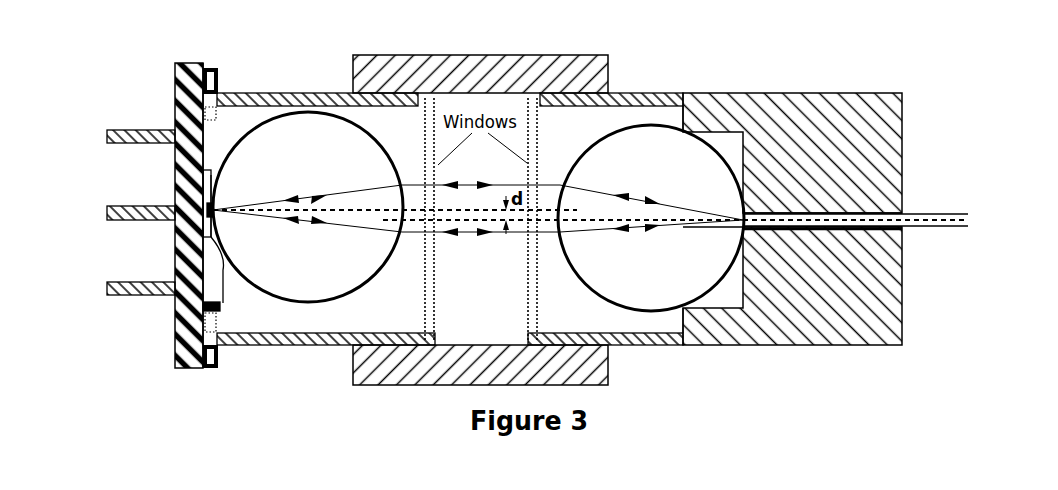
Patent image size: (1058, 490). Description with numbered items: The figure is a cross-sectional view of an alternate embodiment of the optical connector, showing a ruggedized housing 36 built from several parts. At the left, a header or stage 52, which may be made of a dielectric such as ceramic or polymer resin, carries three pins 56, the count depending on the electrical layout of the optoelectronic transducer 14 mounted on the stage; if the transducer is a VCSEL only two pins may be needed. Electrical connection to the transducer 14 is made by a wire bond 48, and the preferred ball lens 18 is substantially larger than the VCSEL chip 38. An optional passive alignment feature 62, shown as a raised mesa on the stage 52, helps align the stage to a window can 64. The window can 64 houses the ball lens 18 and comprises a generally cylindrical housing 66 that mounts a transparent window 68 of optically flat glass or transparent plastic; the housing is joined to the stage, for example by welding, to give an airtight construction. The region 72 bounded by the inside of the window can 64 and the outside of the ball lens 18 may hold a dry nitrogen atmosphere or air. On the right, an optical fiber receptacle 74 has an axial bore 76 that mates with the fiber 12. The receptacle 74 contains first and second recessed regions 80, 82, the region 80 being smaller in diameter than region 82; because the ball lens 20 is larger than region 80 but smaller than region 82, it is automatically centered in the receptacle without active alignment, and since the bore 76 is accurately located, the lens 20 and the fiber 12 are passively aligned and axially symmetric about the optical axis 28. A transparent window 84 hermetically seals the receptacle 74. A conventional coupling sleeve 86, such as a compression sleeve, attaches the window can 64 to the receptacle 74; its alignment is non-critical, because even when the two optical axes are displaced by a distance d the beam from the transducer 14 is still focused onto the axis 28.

The optical fiber 12 is at (917, 217).
The optoelectronic transducer 14 is at (205, 207).
The ball lens 18 is at (311, 153).
The ball lens 20 is at (668, 165).
The optical axis 28 is at (930, 218).
The ruggedized housing 36 is at (308, 388).
The VCSEL chip 38 is at (204, 183).
The wire bond 48 is at (222, 267).
The stage 52 is at (188, 63).
The pins 56 is at (157, 135).
The alignment feature 62 is at (200, 110).
The window can 64 is at (252, 357).
The cylindrical housing 66 is at (287, 347).
The transparent window 68 is at (430, 312).
The region 72 is at (411, 314).
The optical fiber receptacle 74 is at (828, 245).
The axial bore 76 is at (902, 228).
The first recessed region 80 is at (720, 297).
The second recessed region 82 is at (622, 321).
The transparent window 84 is at (533, 310).
The coupling sleeve 86 is at (610, 65).